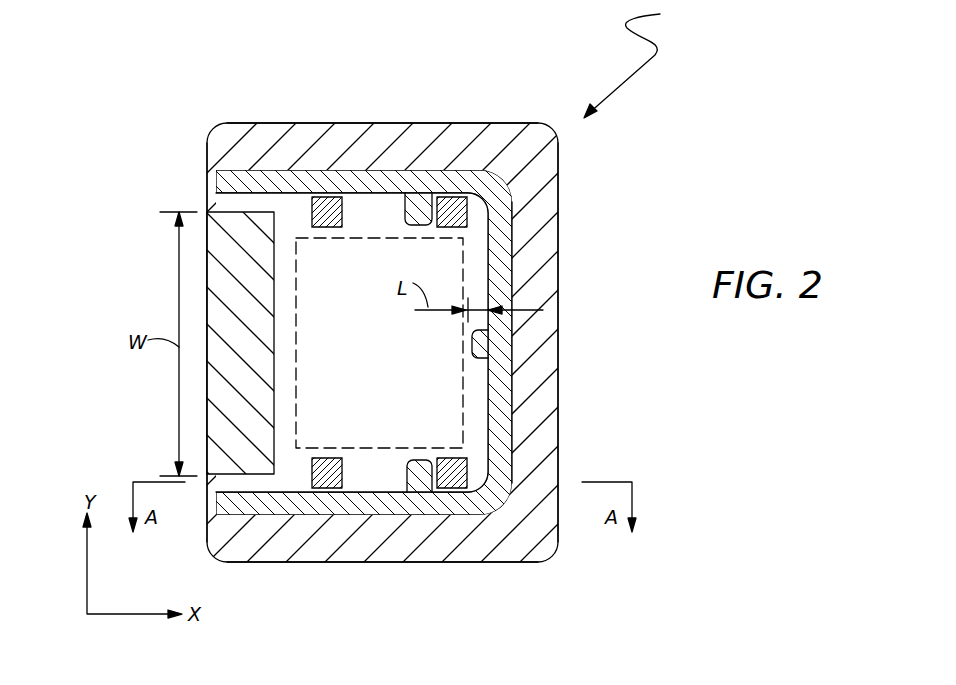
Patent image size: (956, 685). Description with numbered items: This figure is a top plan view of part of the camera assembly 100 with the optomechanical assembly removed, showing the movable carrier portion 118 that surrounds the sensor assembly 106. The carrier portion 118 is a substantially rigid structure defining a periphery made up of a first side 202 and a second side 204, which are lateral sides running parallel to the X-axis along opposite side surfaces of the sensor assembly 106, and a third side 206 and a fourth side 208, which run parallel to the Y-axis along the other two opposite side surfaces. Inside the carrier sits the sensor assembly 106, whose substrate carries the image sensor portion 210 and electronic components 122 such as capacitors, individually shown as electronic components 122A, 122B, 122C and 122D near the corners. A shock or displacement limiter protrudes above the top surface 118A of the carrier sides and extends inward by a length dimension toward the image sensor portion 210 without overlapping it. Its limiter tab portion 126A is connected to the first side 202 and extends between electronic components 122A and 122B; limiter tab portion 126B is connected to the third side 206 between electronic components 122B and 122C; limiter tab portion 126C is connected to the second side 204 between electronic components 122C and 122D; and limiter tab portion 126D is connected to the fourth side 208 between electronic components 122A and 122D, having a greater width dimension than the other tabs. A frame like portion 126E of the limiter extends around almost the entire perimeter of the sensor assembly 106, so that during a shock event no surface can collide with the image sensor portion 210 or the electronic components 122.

The camera assembly 100 is at (642, 61).
The sensor assembly 106 is at (362, 462).
The movable carrier portion 118 is at (548, 560).
The top surface of carrier portion 118A is at (540, 272).
The electronic components 122 is at (467, 337).
The electronic component 122A is at (325, 460).
The electronic component 122B is at (470, 470).
The electronic component 122C is at (452, 210).
The electronic component 122D is at (325, 205).
The limiter tab portion 126A is at (420, 460).
The limiter tab portion 126B is at (472, 342).
The limiter tab portion 126C is at (405, 206).
The limiter tab portion 126D is at (228, 296).
The frame like portion of limiter 126E is at (245, 180).
The first side of carrier portion 202 is at (382, 562).
The second side of carrier portion 204 is at (393, 123).
The third side of carrier portion 206 is at (557, 378).
The fourth side of carrier portion 208 is at (207, 404).
The image sensor portion 210 is at (372, 352).